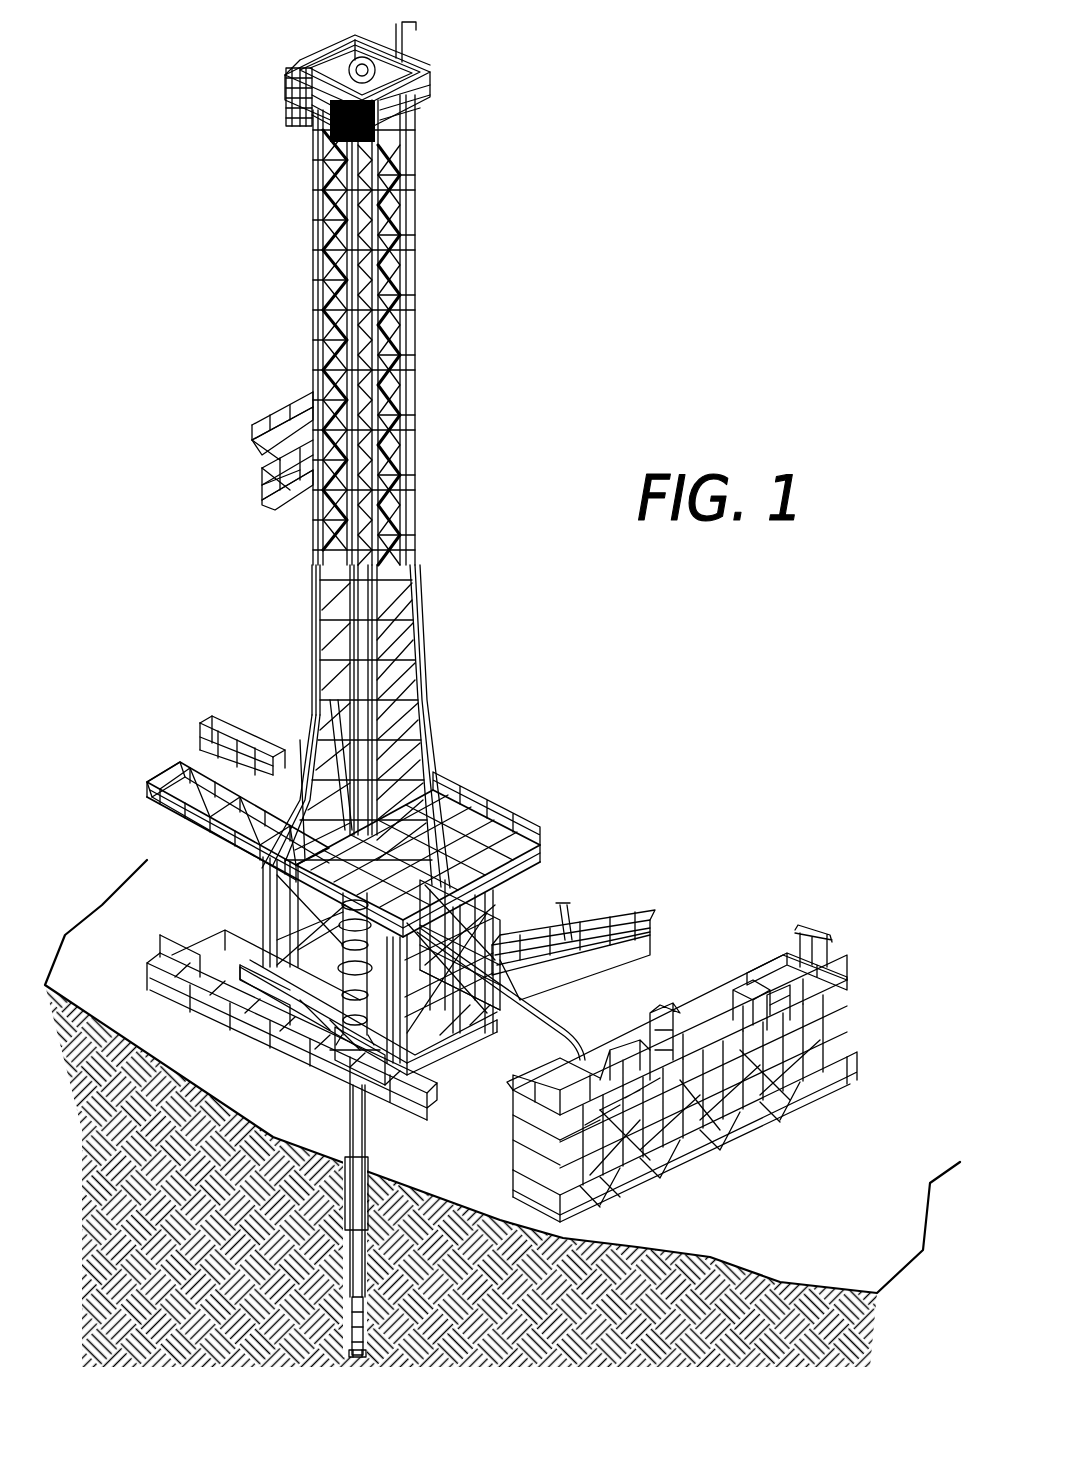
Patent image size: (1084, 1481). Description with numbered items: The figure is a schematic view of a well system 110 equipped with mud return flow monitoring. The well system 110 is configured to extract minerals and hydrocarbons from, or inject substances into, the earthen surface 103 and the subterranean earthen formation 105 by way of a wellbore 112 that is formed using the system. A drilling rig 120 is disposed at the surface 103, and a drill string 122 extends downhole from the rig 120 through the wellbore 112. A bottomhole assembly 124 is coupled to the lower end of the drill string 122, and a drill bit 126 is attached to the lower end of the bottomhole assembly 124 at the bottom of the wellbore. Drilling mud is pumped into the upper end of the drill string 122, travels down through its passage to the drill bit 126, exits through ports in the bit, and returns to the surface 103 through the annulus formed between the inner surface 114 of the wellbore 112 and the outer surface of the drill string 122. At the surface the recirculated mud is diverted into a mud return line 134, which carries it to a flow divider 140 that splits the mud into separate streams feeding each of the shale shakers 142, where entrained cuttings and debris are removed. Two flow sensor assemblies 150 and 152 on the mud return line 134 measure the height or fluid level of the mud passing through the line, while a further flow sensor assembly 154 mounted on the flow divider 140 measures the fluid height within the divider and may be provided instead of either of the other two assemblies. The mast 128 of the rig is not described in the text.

The earthen surface 103 is at (313, 1122).
The subterranean earthen formation 105 is at (207, 1277).
The well system 110 is at (571, 161).
The wellbore 112 is at (357, 1284).
The inner surface of the wellbore 114 is at (375, 1273).
The drilling rig 120 is at (406, 918).
The drill string 122 is at (360, 1277).
The bottomhole assembly 124 is at (360, 1322).
The drill bit 126 is at (357, 1356).
The mast 128 is at (410, 323).
The mud return line 134 is at (540, 1016).
The flow divider 140 is at (648, 1073).
The shale shakers 142 is at (697, 1160).
The flow sensor assembly 150 is at (447, 950).
The flow sensor assembly 152 is at (468, 1033).
The flow sensor assembly 154 is at (570, 1062).